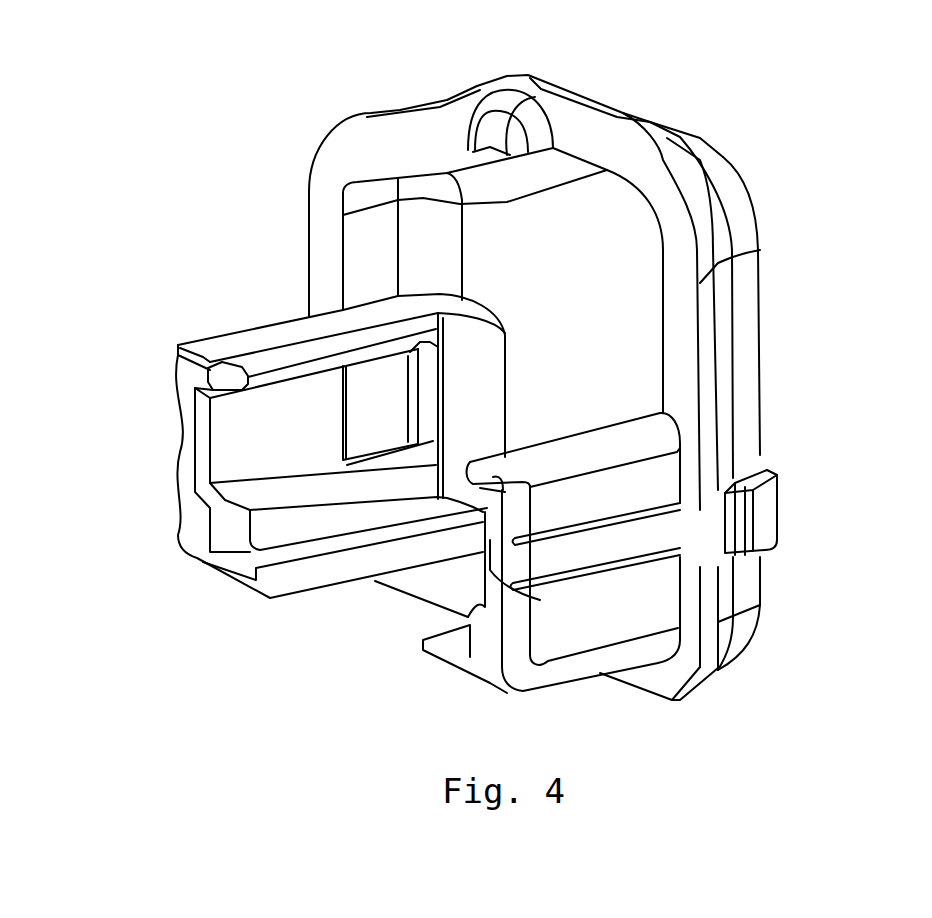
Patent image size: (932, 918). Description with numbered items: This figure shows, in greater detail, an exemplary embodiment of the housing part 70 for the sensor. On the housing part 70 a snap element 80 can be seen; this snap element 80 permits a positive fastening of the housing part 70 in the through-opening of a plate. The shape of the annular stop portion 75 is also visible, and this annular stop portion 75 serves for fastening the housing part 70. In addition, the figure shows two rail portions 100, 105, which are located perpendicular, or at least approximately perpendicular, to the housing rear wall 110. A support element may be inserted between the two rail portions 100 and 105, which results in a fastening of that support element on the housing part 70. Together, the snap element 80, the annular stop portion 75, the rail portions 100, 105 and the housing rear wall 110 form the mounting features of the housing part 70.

The housing part 70 is at (398, 150).
The annular stop portion 75 is at (610, 148).
The housing rear wall 110 is at (590, 352).
The rail portion 100 is at (237, 342).
The rail portion 105 is at (560, 632).
The snap element 80 is at (763, 510).